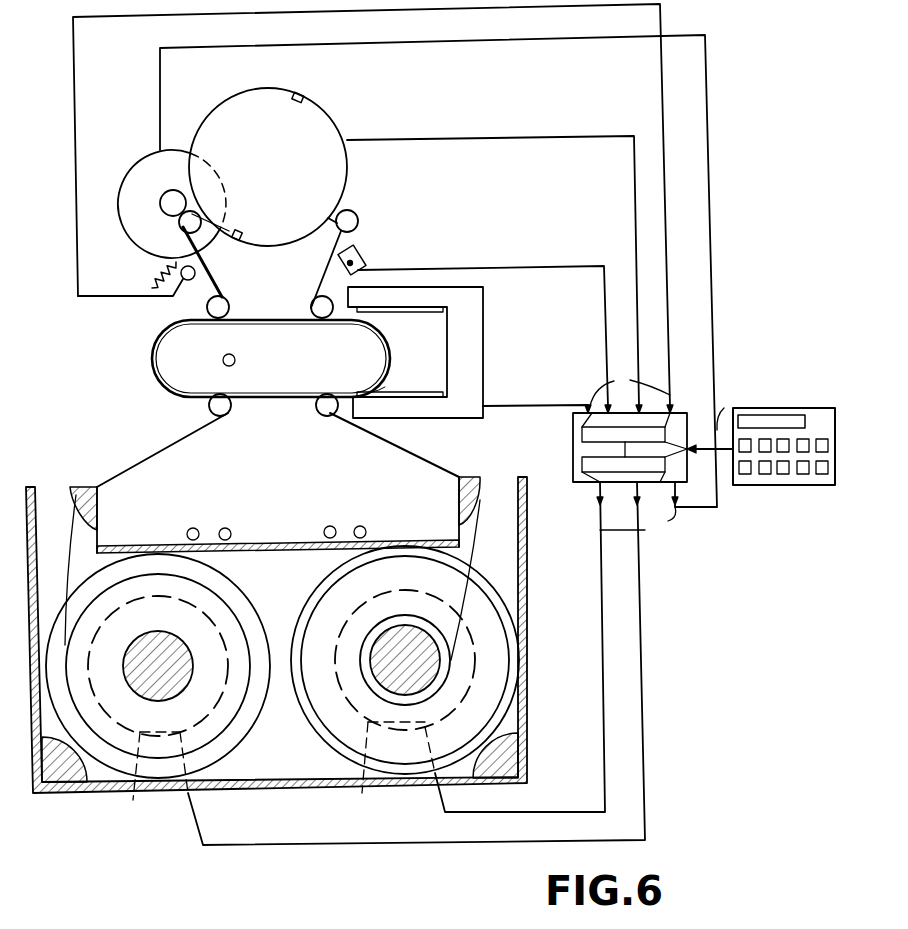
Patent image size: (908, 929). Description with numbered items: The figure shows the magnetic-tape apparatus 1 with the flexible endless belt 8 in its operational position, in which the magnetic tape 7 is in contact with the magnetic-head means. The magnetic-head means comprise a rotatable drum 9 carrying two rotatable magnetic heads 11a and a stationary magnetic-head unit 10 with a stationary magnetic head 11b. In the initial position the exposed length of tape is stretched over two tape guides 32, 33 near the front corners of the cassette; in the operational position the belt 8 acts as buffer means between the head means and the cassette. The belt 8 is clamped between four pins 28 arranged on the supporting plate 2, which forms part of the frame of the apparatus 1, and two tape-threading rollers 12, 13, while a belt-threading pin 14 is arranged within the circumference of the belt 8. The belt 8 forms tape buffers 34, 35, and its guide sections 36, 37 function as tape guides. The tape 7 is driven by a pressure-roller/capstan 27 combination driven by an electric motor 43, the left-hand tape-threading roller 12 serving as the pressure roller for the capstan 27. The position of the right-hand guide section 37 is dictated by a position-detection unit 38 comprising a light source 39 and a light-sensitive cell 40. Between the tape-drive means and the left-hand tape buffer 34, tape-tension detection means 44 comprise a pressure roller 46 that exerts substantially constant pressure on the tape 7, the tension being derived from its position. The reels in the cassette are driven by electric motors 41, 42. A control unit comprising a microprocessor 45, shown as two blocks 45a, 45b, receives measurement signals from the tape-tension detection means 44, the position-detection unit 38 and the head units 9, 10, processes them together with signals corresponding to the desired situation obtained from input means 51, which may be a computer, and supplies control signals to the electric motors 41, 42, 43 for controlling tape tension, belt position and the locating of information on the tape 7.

The magnetic-tape apparatus 1 is at (390, 107).
The supporting plate 2 is at (101, 381).
The magnetic tape 7 is at (480, 541).
The flexible endless belt 8 is at (284, 401).
The rotatable drum 9 is at (313, 132).
The stationary magnetic-head unit 10 is at (366, 262).
The rotatable magnetic heads 11a is at (300, 94).
The stationary magnetic head 11b is at (356, 250).
The tape-threading roller 12 is at (181, 227).
The tape-threading roller 13 is at (350, 210).
The belt-threading pin 14 is at (223, 360).
The capstan 27 is at (161, 197).
The pins 28 is at (365, 530).
The tape guide 32 is at (70, 490).
The tape guide 33 is at (482, 477).
The tape buffer 34 is at (152, 408).
The tape buffer 35 is at (390, 392).
The guide section 36 is at (156, 352).
The guide section 37 is at (391, 357).
The position-detection unit 38 is at (473, 345).
The light source 39 is at (427, 313).
The light-sensitive cell 40 is at (427, 392).
The electric motor 41 is at (158, 690).
The electric motor 42 is at (405, 683).
The electric motor 43 is at (148, 154).
The tape-tension detection means 44 is at (146, 270).
The microprocessor 45 is at (590, 438).
The controller unit 45a is at (590, 464).
The controller unit 45b is at (583, 484).
The pressure roller 46 is at (216, 283).
The input means 51 is at (781, 485).